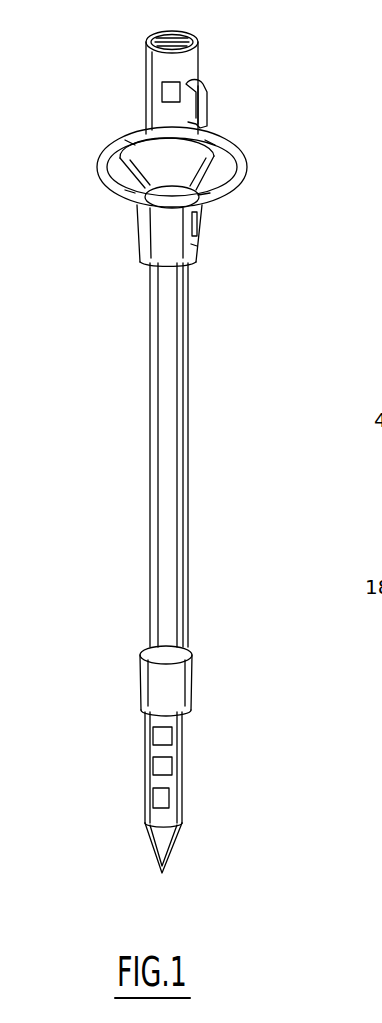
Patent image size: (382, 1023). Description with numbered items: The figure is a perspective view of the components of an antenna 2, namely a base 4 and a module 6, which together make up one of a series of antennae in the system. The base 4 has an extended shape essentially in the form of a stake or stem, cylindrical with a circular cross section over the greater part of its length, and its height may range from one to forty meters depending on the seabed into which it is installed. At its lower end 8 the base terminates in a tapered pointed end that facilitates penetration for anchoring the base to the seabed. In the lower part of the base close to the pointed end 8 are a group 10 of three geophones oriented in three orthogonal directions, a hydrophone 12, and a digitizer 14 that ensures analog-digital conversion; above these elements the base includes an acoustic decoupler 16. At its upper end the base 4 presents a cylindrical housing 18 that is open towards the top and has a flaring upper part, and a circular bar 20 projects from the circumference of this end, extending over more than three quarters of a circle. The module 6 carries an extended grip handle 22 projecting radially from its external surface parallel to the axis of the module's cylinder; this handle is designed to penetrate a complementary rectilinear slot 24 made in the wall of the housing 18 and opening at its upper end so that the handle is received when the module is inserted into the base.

The antenna 2 is at (226, 514).
The base 4 is at (170, 442).
The module 6 is at (183, 70).
The lower end 8 is at (160, 841).
The group of three geophones 10 is at (168, 800).
The hydrophone 12 is at (168, 766).
The digitizer 14 is at (172, 737).
The acoustic decoupler 16 is at (176, 678).
The cylindrical housing 18 is at (198, 253).
The circular bar 20 is at (243, 157).
The grip handle 22 is at (208, 108).
The rectilinear slot 24 is at (197, 220).